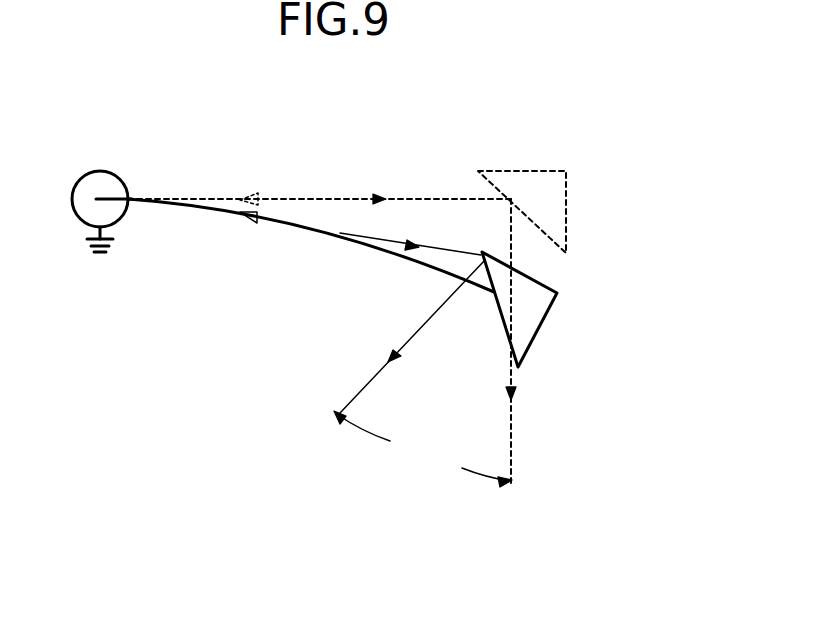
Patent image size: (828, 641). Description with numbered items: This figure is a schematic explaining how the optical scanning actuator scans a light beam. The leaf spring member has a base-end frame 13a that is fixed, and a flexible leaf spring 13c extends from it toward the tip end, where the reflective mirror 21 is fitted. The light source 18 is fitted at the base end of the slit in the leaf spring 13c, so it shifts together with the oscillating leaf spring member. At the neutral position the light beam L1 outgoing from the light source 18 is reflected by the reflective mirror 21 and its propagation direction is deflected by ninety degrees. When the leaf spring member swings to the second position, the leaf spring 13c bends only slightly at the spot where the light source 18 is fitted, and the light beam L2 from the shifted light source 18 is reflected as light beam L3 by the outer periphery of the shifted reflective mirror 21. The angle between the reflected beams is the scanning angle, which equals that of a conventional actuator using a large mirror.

The base-end frame 13a is at (93, 182).
The leaf spring 13c is at (377, 251).
The light source 18 is at (252, 192).
The reflective mirror 21 is at (552, 193).
The light beam L1 is at (347, 196).
The light beam L2 is at (442, 248).
The light beam L3 is at (367, 382).